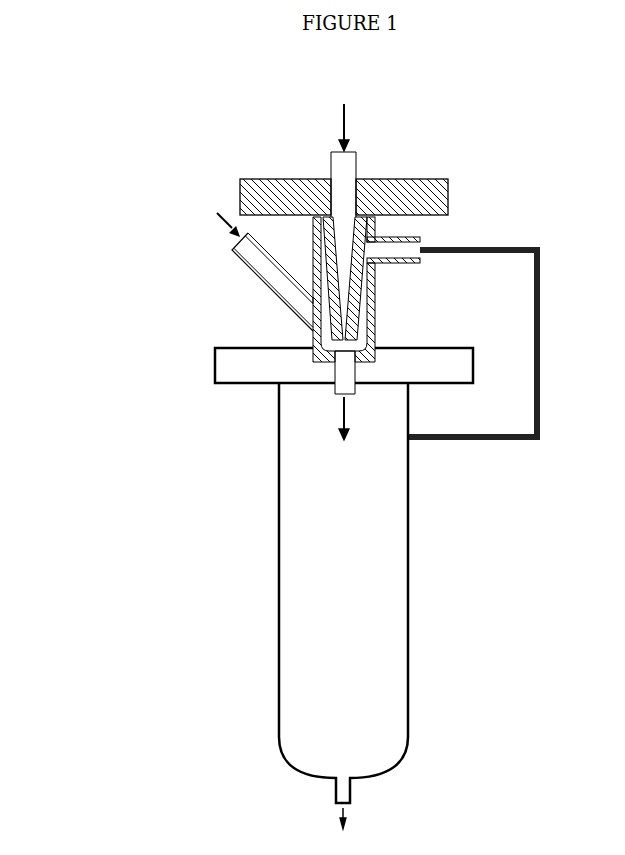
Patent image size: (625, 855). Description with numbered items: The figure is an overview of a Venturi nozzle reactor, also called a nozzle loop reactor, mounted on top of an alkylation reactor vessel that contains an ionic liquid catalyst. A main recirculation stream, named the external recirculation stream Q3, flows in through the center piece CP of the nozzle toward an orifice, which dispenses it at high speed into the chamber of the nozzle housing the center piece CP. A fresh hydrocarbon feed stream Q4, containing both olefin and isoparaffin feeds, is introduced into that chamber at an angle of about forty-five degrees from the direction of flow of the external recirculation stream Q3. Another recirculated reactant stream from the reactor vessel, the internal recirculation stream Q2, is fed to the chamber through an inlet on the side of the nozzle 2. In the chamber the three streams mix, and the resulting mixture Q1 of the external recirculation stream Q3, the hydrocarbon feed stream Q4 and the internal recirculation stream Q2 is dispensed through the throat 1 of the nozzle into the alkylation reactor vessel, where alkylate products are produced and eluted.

The throat 1 is at (200, 464).
The inlet on the side of the nozzle 2 is at (557, 217).
The mixture Q1 is at (354, 418).
The internal recirculation stream Q2 is at (472, 343).
The external recirculation stream Q3 is at (354, 127).
The fresh hydrocarbon feed stream Q4 is at (130, 328).
The center piece CP is at (358, 221).